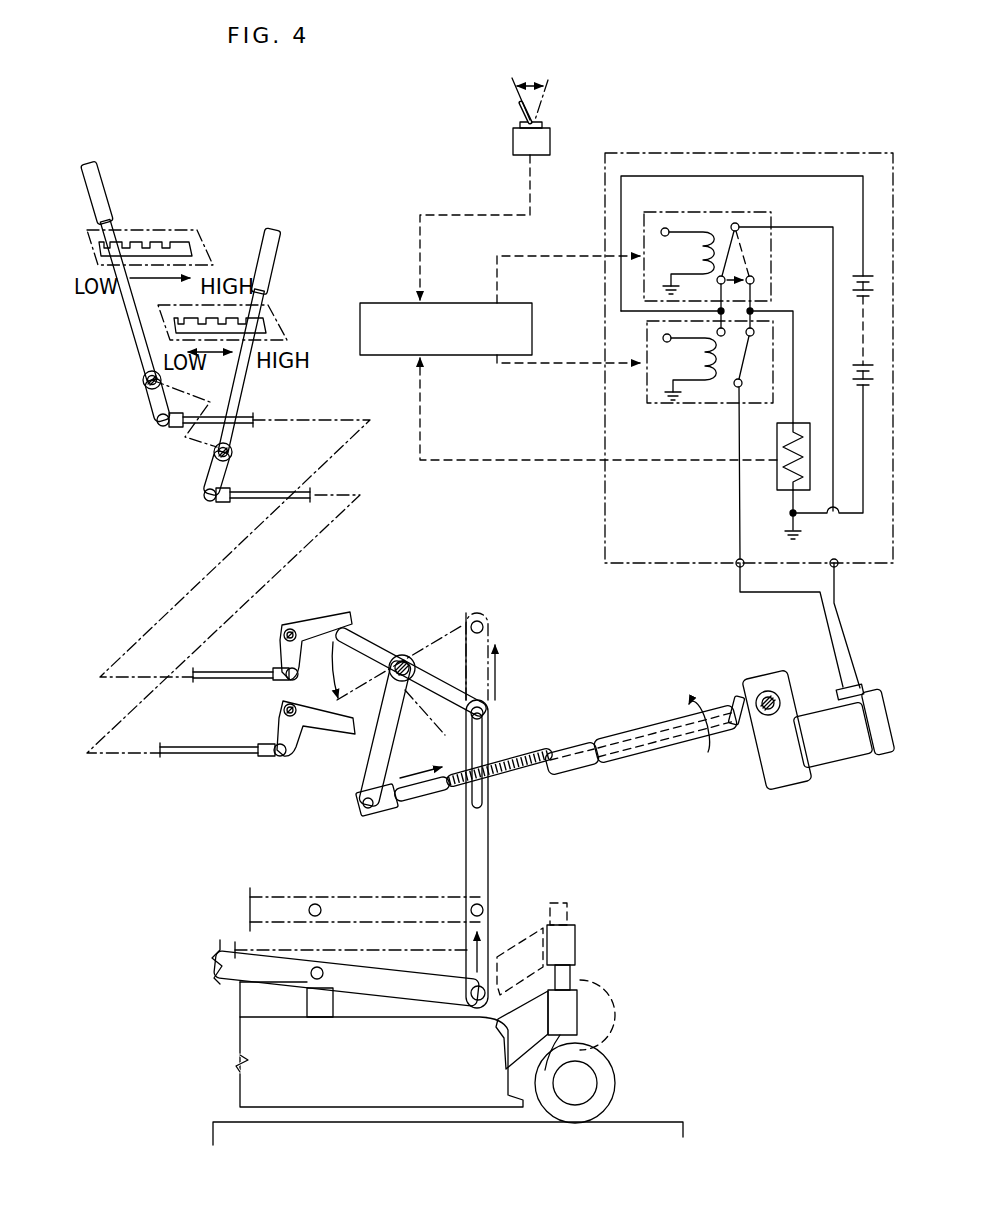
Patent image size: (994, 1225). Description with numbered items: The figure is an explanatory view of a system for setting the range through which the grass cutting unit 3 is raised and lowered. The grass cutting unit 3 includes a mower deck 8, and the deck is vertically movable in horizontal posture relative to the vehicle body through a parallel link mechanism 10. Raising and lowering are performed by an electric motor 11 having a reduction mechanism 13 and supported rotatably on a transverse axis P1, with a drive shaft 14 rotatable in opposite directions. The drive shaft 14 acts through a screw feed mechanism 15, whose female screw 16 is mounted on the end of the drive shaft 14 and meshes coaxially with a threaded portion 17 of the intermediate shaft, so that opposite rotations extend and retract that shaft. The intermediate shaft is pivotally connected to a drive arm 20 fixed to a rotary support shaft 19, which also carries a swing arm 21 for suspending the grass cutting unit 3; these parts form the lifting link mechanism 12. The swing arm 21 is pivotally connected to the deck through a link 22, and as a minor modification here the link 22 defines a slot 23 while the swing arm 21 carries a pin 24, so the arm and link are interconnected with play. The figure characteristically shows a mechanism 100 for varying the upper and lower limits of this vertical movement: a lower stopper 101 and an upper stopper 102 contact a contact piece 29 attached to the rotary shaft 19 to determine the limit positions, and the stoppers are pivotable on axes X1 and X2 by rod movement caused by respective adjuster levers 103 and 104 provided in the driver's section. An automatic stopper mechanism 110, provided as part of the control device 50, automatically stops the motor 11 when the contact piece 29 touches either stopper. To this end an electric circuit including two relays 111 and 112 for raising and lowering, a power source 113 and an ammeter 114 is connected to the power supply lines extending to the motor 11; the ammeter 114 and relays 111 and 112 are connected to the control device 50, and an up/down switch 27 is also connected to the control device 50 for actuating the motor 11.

The grass cutting unit 3 is at (321, 1110).
The mower deck 8 is at (467, 1110).
The parallel link mechanism 10 is at (217, 900).
The electric motor 11 is at (847, 760).
The lifting link mechanism 12 is at (510, 850).
The reduction mechanism 13 is at (783, 789).
The drive shaft 14 is at (742, 733).
The screw feed mechanism 15 is at (630, 782).
The female screw 16 is at (575, 770).
The threaded portion 17 is at (533, 773).
The rotary support shaft 19 is at (410, 653).
The drive arm 20 is at (362, 782).
The swing arm 21 is at (440, 718).
The link 22 is at (467, 882).
The slot 23 is at (490, 740).
The pin 24 is at (487, 712).
The up/down switch 27 is at (513, 132).
The contact piece 29 is at (363, 637).
The control device 50 is at (383, 350).
The mechanism for varying limit positions 100 is at (190, 775).
The lower stopper 101 is at (327, 728).
The upper stopper 102 is at (318, 614).
The adjuster lever 103 is at (282, 247).
The adjuster lever 104 is at (103, 182).
The automatic stopper mechanism 110 is at (749, 321).
The relay 111 is at (758, 212).
The relay 112 is at (690, 403).
The power source 113 is at (850, 272).
The ammeter 114 is at (779, 489).
The transverse axis P1 is at (767, 693).
The pivot axis of lower stopper X1 is at (279, 710).
The pivot axis of upper stopper X2 is at (279, 637).